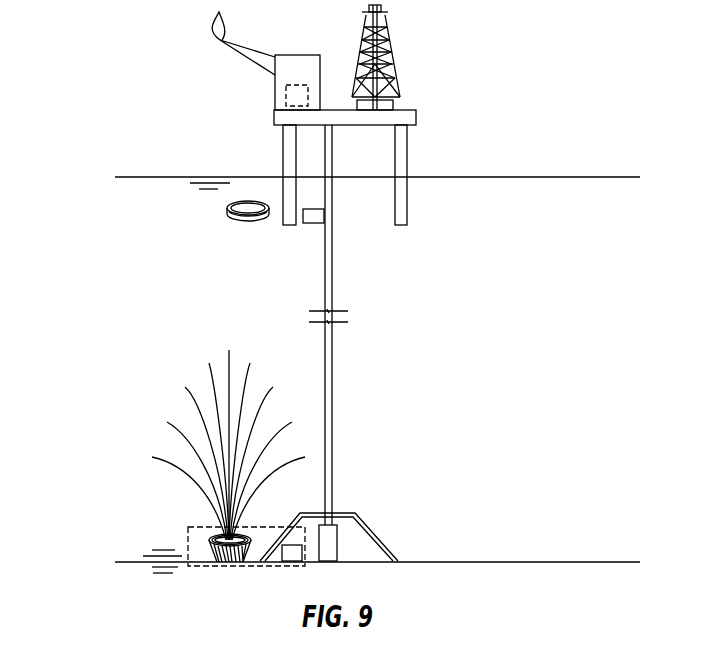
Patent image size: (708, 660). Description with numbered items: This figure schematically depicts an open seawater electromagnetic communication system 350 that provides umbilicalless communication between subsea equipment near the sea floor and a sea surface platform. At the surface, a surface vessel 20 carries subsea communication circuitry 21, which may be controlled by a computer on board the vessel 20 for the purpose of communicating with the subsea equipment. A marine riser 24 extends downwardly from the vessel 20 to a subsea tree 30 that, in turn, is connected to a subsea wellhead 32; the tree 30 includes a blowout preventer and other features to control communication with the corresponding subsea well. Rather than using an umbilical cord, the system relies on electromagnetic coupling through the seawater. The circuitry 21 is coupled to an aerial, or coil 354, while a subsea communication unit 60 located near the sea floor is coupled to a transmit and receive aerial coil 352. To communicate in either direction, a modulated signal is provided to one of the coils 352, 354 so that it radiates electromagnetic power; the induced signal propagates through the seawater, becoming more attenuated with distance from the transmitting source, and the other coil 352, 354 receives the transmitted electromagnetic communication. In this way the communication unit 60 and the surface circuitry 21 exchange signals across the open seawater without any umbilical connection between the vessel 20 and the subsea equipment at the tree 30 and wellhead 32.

The open seawater electromagnetic communication system 350 is at (117, 62).
The surface vessel 20 is at (407, 150).
The subsea communication circuitry 21 is at (292, 85).
The marine riser 24 is at (332, 270).
The aerial coil 354 is at (230, 218).
The transmit and receive aerial coil 352 is at (210, 535).
The communication unit 60 is at (220, 570).
The subsea tree 30 is at (350, 511).
The subsea wellhead 32 is at (333, 550).